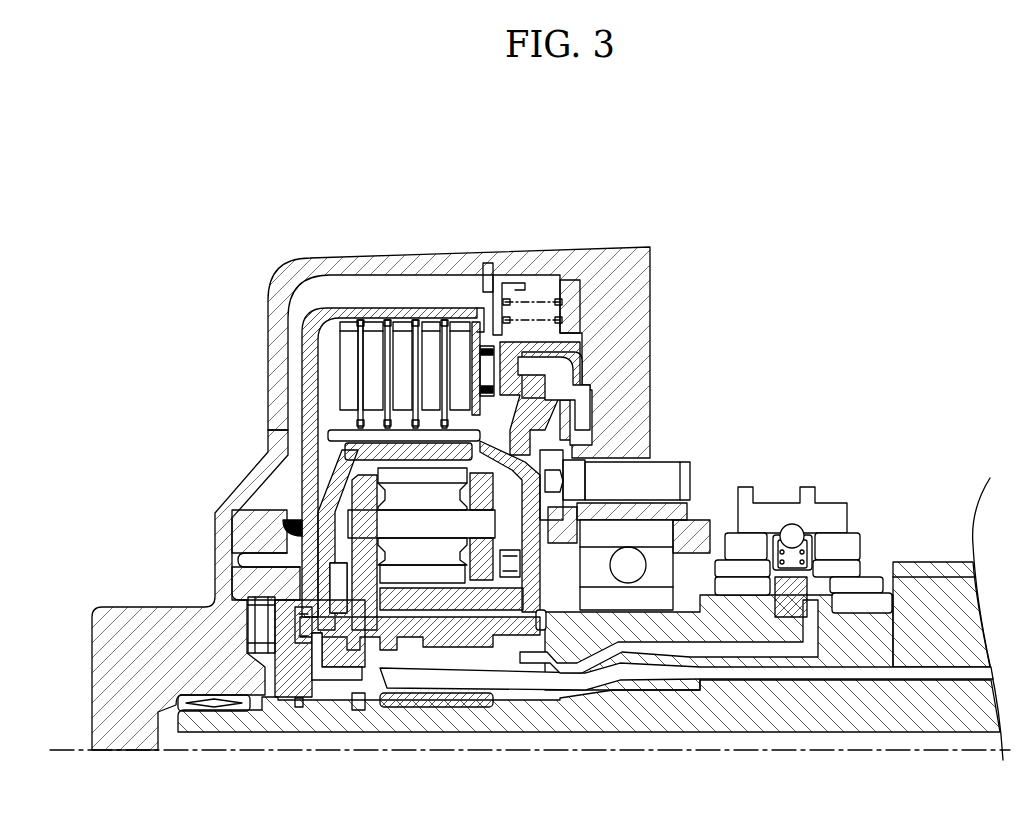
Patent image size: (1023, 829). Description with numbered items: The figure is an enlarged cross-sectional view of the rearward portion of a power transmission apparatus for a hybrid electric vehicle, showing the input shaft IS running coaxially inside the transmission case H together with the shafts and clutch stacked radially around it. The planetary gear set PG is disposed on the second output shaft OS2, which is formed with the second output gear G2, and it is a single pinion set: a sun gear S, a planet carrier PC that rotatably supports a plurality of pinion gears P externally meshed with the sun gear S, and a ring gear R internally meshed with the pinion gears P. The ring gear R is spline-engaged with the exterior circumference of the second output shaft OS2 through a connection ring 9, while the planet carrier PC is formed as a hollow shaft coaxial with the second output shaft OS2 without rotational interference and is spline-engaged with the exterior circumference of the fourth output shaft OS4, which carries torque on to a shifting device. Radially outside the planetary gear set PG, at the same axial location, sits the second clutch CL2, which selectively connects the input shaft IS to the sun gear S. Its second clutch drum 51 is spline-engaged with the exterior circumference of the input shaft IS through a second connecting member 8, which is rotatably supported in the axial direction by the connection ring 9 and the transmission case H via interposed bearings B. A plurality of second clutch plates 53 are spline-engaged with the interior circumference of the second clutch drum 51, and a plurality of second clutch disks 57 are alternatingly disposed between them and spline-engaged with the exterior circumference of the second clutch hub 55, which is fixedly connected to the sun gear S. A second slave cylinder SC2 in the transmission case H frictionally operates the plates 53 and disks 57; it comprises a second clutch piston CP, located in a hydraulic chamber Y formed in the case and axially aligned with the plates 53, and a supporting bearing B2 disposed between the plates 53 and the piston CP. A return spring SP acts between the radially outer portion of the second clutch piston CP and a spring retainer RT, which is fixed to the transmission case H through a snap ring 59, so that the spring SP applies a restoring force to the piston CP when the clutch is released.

The second clutch drum 51 is at (330, 312).
The second clutch plates 53 is at (346, 342).
The second clutch disks 57 is at (412, 342).
The snap ring 59 is at (492, 262).
The second clutch hub 55 is at (340, 426).
The second slave cylinder SC2 is at (492, 340).
The spring retainer RT is at (548, 297).
The return spring SP is at (567, 276).
The transmission case H is at (620, 274).
The supporting bearing B2 is at (500, 343).
The second clutch CL2 is at (439, 366).
The planetary gear set PG is at (292, 566).
The ring gear R is at (395, 450).
The pinion gears P is at (400, 497).
The planet carrier PC is at (368, 552).
The sun gear S is at (422, 598).
The second clutch piston CP is at (520, 397).
The hydraulic chamber Y is at (592, 447).
The bearings B is at (628, 562).
The second output gear G2 is at (928, 572).
The second output shaft OS2 is at (617, 672).
The fourth output shaft OS4 is at (730, 622).
The input shaft IS is at (865, 708).
The second connecting member 8 is at (307, 700).
The connection ring 9 is at (357, 680).